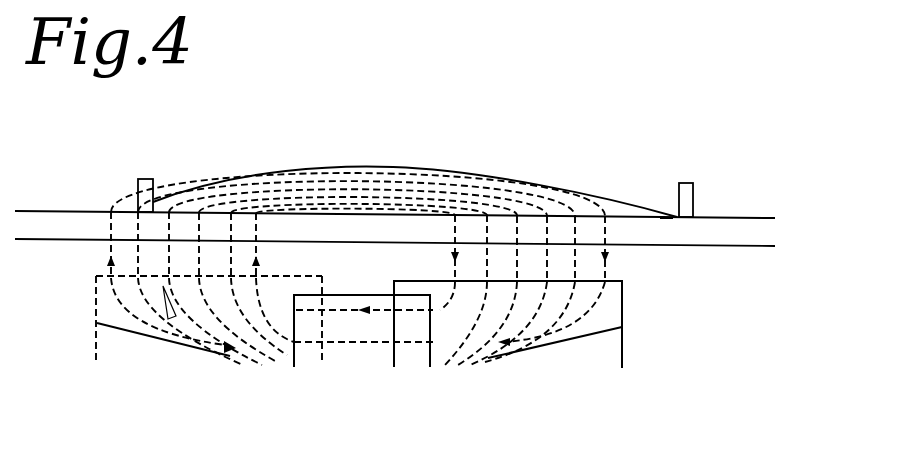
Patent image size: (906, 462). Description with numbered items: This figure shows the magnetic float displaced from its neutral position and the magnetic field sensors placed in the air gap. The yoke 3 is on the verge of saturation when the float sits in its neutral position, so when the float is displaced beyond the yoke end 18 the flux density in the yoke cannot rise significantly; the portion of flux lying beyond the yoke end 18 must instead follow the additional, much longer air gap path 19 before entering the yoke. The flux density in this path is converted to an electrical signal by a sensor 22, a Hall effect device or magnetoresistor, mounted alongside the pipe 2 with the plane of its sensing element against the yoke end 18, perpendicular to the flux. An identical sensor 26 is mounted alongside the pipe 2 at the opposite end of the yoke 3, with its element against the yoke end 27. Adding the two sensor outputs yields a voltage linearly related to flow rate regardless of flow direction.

The pipe 2 is at (408, 224).
The yoke 3 is at (398, 167).
The yoke end 18 is at (153, 213).
The additional air gap path 19 is at (207, 176).
The sensor 22 is at (136, 190).
The sensor 26 is at (696, 198).
The yoke end 27 is at (673, 213).